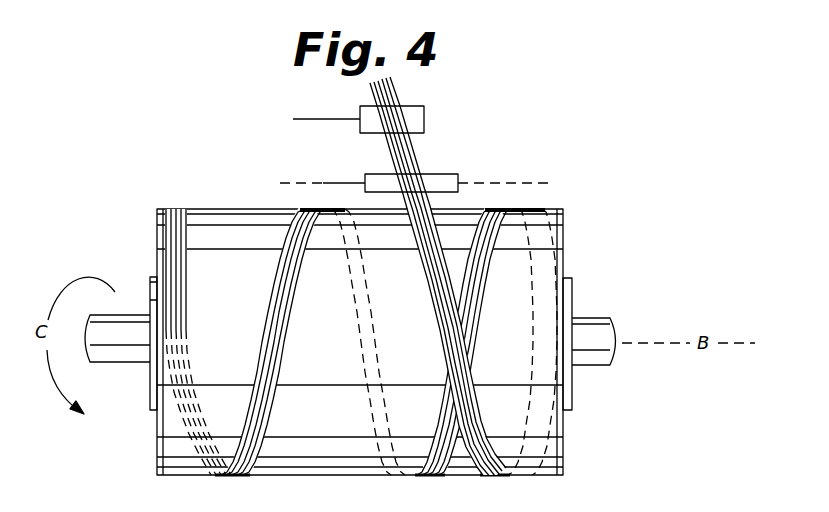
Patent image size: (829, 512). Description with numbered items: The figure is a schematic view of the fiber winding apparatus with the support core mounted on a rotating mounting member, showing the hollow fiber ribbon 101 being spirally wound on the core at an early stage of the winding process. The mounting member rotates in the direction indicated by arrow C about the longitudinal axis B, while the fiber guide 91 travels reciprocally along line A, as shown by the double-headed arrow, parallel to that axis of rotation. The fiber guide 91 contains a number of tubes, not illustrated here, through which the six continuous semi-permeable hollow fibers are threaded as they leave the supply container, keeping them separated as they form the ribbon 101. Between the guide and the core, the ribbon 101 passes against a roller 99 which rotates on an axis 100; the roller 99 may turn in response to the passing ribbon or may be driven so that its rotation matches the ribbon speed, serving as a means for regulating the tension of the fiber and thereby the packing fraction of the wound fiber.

The fiber guide 91 is at (424, 119).
The roller 99 is at (452, 182).
The axis 100 is at (528, 185).
The fiber ribbon 101 is at (408, 207).